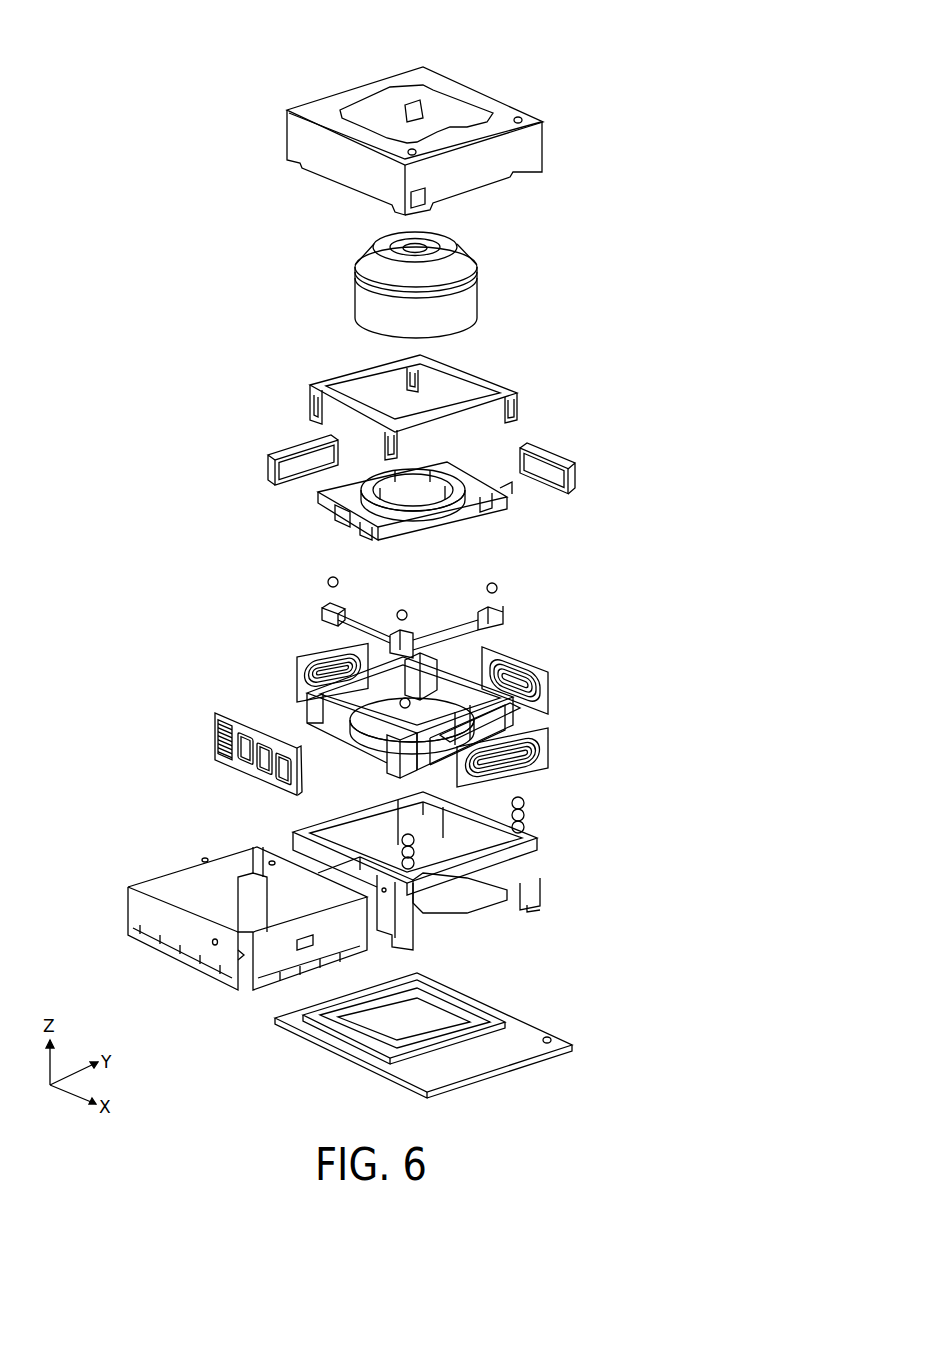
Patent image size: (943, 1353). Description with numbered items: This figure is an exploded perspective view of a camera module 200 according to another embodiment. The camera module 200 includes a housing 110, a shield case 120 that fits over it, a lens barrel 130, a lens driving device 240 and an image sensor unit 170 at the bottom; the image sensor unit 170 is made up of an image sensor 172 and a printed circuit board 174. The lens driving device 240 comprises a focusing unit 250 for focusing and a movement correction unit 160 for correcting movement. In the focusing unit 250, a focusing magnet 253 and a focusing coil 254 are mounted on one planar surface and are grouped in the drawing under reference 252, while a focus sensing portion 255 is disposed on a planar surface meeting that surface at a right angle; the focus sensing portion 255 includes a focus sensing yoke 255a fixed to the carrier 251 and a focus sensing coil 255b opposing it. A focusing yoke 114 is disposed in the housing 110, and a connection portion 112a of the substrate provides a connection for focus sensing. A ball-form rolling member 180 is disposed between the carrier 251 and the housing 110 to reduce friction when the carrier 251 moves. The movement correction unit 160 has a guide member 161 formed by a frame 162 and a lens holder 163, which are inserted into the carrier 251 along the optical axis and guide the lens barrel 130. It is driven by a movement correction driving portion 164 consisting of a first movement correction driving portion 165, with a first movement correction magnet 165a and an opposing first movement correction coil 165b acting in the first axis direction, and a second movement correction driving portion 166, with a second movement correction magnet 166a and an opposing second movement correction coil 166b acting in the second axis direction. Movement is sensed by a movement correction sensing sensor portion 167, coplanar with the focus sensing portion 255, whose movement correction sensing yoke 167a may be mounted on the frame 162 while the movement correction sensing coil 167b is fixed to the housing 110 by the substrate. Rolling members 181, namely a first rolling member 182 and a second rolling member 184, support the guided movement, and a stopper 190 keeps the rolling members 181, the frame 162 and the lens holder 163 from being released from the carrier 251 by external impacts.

The camera module 200 is at (143, 37).
The housing 110 is at (473, 912).
The connection portion 112a is at (241, 936).
The focusing yoke 114 is at (268, 963).
The shield case 120 is at (527, 160).
The lens barrel 130 is at (375, 318).
The movement correction unit 160 is at (247, 433).
The guide member 161 is at (255, 540).
The frame 162 is at (330, 668).
The lens holder 163 is at (372, 522).
The movement correction driving portion 164 is at (713, 618).
The first movement correction driving portion 165 is at (655, 600).
The first movement correction magnet 165a is at (510, 653).
The first movement correction coil 165b is at (548, 667).
The second movement correction driving portion 166 is at (655, 418).
The second movement correction magnet 166a is at (560, 458).
The second movement correction coil 166b is at (393, 440).
The movement correction sensing sensor portion 167 is at (185, 495).
The movement correction sensing yoke 167a is at (395, 535).
The movement correction sensing coil 167b is at (290, 700).
The image sensor unit 170 is at (612, 948).
The image sensor 172 is at (602, 1010).
The printed circuit board 174 is at (422, 1010).
The rolling member 180 is at (525, 818).
The rolling members 181 is at (471, 550).
The first rolling member 182 is at (404, 610).
The second rolling member 184 is at (352, 607).
The stopper 190 is at (487, 388).
The lens driving device 240 is at (102, 400).
The focusing unit 250 is at (244, 658).
The carrier 251 is at (387, 762).
The OIS driving unit 252 is at (633, 727).
The focusing magnet 253 is at (500, 710).
The focusing coil 254 is at (525, 740).
The focus sensing portion 255 is at (114, 683).
The focus sensing yoke 255a is at (248, 722).
The focus sensing coil 255b is at (212, 758).